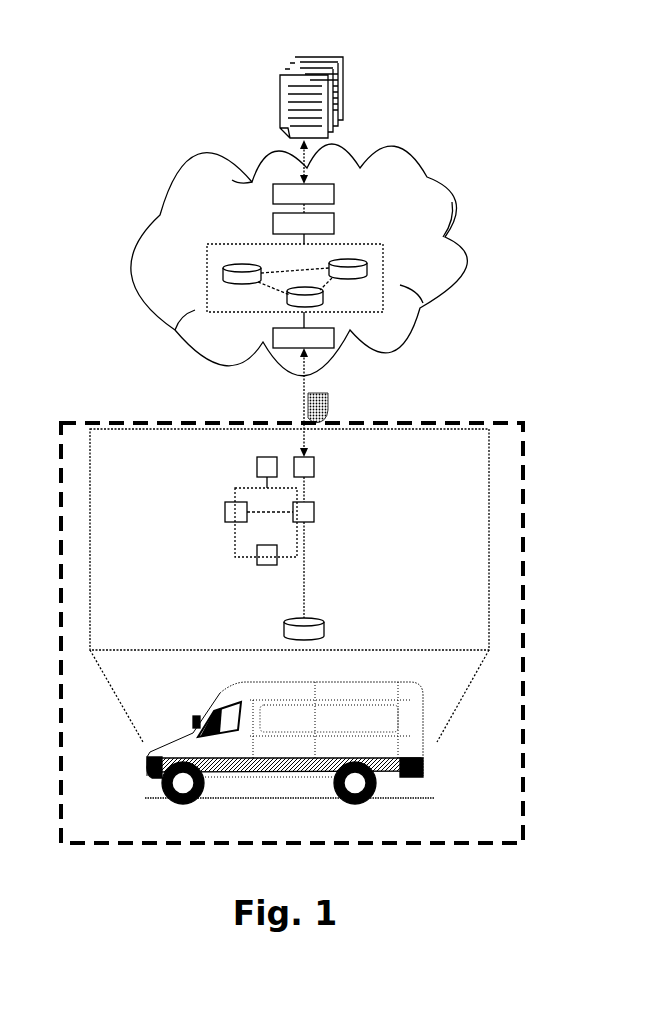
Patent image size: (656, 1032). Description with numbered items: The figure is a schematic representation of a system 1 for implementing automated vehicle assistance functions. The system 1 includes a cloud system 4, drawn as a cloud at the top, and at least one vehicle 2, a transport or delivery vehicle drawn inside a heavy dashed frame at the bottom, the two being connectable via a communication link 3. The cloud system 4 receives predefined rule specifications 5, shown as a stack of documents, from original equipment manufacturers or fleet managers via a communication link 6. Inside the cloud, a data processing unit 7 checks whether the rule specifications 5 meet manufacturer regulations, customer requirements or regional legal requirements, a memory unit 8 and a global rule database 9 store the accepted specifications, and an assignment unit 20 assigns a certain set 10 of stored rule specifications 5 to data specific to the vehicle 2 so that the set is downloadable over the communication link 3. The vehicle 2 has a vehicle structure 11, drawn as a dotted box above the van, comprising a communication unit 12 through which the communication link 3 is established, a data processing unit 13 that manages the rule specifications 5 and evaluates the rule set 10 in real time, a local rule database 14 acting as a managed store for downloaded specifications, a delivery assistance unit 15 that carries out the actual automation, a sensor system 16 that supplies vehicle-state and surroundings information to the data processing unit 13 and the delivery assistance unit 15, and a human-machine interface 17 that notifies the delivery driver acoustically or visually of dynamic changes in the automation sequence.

The system 1 is at (447, 116).
The vehicle 2 is at (523, 698).
The communication link 3 is at (302, 383).
The cloud system 4 is at (465, 251).
The rule specifications 5 is at (281, 105).
The communication link 6 is at (300, 145).
The data processing unit 7 is at (316, 189).
The memory unit 8 is at (320, 218).
The global rule database 9 is at (208, 262).
The certain set of rule specifications 10 is at (330, 396).
The vehicle structure 11 is at (489, 543).
The communication unit 12 is at (315, 467).
The data processing unit 13 is at (315, 512).
The local rule database 14 is at (310, 624).
The delivery assistance unit 15 is at (225, 510).
The sensor system 16 is at (265, 568).
The human-machine interface 17 is at (257, 462).
The assignment unit 20 is at (280, 332).